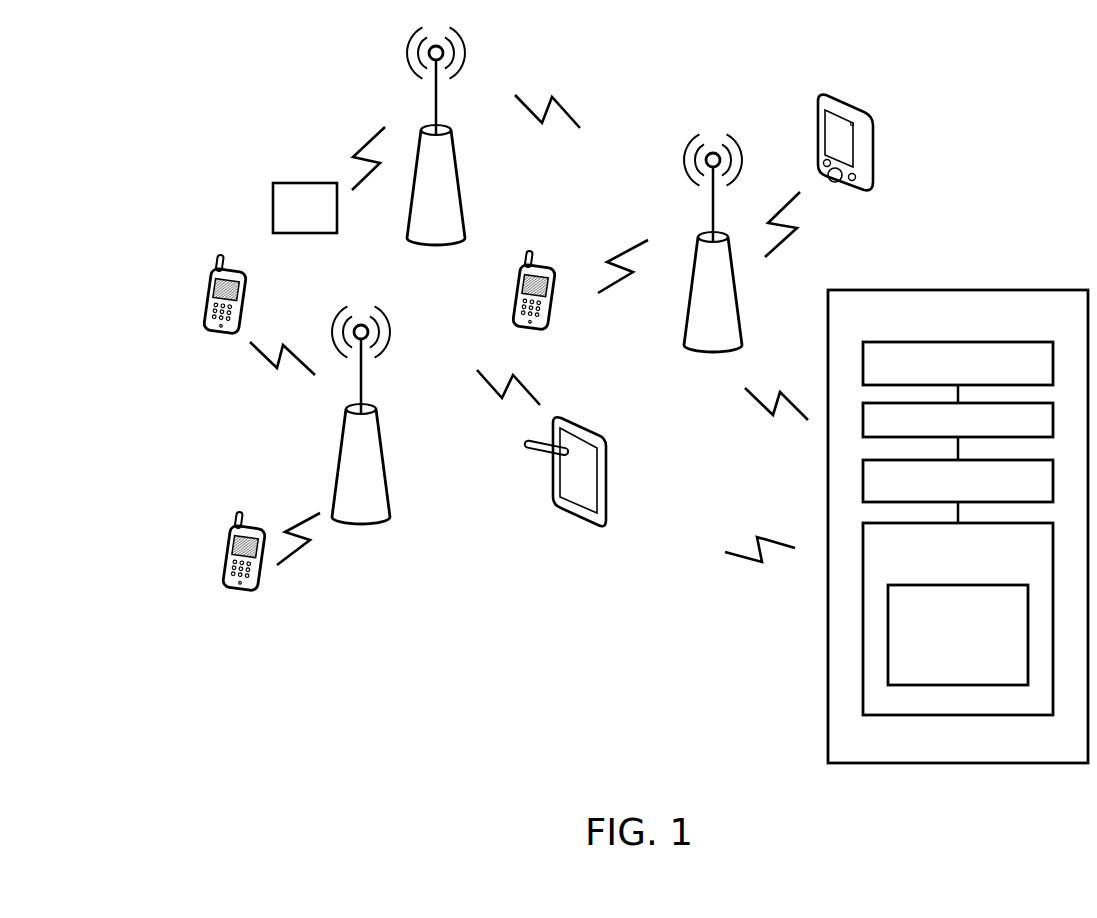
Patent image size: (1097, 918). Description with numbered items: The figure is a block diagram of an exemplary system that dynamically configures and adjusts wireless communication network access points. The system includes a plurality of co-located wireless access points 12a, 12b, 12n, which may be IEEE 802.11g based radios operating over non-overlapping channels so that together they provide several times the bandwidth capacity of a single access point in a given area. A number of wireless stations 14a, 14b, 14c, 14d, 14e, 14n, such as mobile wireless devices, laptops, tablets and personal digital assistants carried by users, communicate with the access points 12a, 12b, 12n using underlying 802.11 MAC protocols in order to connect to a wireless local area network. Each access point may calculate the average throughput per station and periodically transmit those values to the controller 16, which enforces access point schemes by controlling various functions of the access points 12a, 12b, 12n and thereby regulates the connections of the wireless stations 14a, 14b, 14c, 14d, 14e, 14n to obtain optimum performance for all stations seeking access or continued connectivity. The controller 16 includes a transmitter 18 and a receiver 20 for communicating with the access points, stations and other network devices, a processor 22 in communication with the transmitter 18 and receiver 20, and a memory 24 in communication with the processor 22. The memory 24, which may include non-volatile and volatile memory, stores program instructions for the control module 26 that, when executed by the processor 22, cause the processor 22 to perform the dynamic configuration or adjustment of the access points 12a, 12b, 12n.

The wireless communication network access point 12a is at (450, 222).
The wireless communication network access point 12b is at (378, 504).
The wireless communication network access point 12n is at (730, 328).
The wireless station 14a is at (203, 292).
The wireless station 14b is at (222, 545).
The wireless station 14c is at (609, 470).
The wireless station 14d is at (816, 94).
The wireless station 14e is at (512, 302).
The wireless station 14n is at (305, 208).
The controller 16 is at (1017, 324).
The transmitter 18 is at (1025, 374).
The receiver 20 is at (1013, 430).
The processor 22 is at (1020, 492).
The memory 24 is at (1010, 556).
The control module 26 is at (1007, 660).